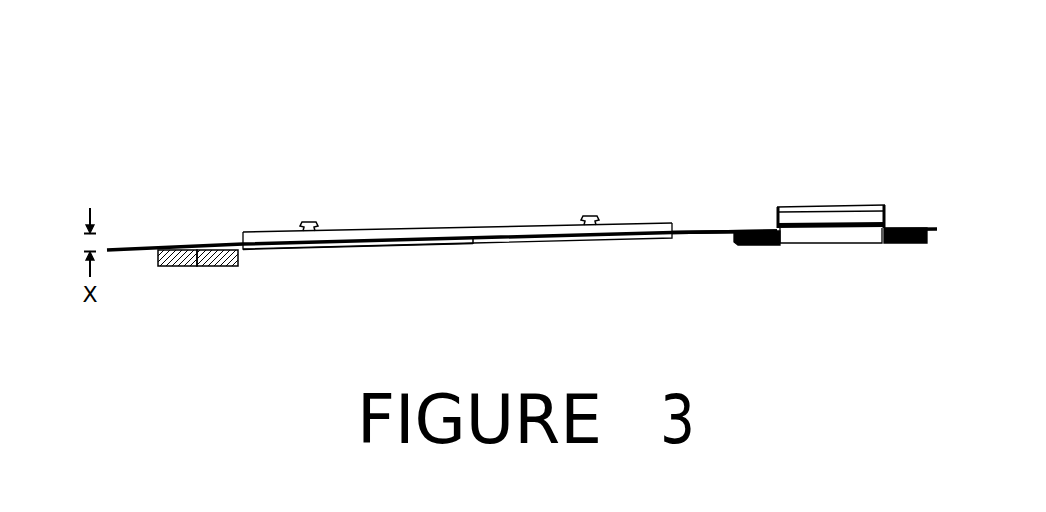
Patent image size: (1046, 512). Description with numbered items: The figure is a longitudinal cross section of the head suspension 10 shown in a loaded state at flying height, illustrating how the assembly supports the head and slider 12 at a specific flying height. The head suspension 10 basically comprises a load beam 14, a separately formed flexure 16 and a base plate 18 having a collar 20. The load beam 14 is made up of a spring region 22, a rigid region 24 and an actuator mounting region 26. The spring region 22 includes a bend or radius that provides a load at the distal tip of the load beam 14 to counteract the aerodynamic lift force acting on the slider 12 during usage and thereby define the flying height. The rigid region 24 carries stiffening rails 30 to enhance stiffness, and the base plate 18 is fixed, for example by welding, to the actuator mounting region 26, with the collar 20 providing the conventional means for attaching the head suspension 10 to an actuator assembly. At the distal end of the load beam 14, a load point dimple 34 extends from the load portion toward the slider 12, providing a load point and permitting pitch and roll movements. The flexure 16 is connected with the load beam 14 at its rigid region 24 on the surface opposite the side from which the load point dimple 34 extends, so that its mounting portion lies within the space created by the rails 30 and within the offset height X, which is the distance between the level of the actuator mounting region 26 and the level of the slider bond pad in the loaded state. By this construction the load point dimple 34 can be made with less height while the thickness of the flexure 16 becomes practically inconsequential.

The head suspension 10 is at (517, 170).
The slider 12 is at (223, 263).
The load beam 14 is at (402, 242).
The flexure 16 is at (215, 247).
The base plate 18 is at (758, 247).
The collar 20 is at (780, 206).
The spring region 22 is at (703, 232).
The rigid region 24 is at (473, 243).
The actuator mounting region 26 is at (896, 227).
The stiffening rails 30 is at (637, 223).
The load point dimple 34 is at (197, 267).